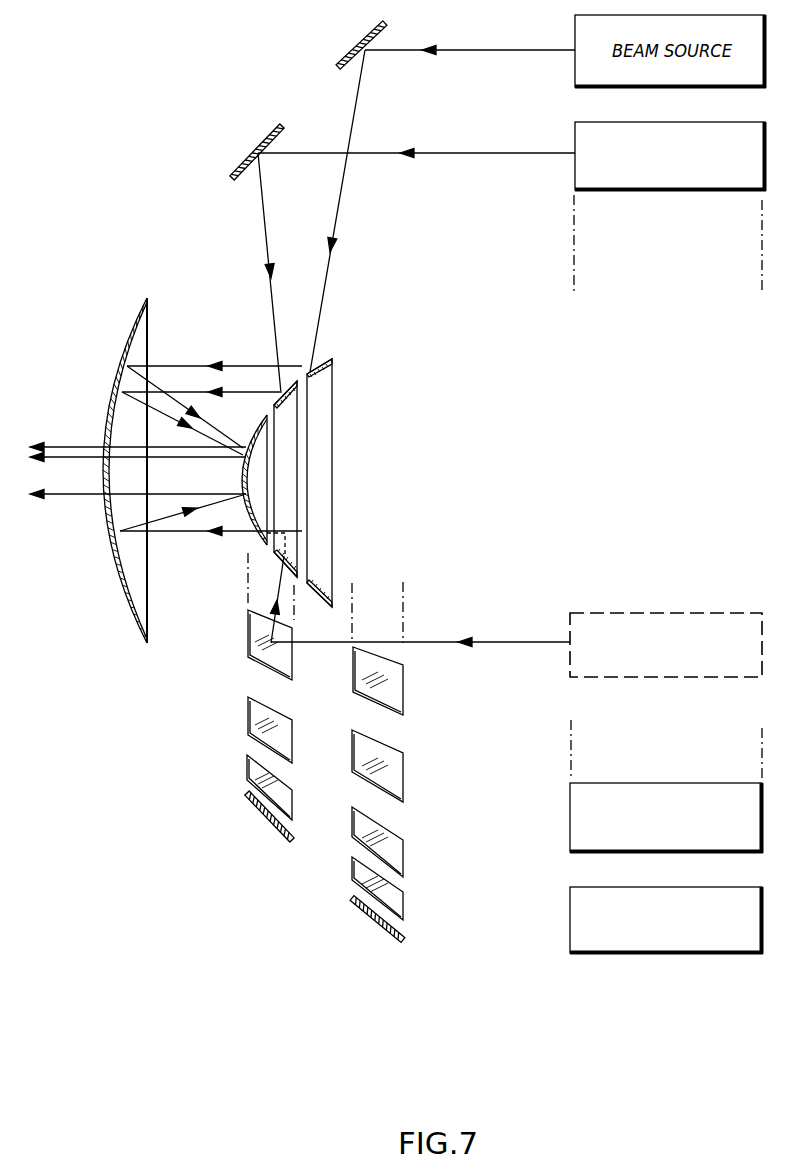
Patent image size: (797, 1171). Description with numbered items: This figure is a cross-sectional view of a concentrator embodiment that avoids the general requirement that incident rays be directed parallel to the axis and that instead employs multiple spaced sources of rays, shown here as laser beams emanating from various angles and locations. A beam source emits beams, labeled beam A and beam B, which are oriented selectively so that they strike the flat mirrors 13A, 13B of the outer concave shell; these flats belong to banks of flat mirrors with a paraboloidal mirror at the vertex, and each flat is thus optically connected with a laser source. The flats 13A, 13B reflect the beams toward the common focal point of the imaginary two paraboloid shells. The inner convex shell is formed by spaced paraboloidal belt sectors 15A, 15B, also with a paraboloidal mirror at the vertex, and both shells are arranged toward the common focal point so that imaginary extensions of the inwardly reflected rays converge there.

The flat mirror 13A is at (338, 63).
The flat mirror 13B is at (267, 136).
The paraboloidal belt sector 15A is at (335, 362).
The paraboloidal belt sector 15B is at (279, 393).
The beam A is at (465, 49).
The beam B is at (466, 155).